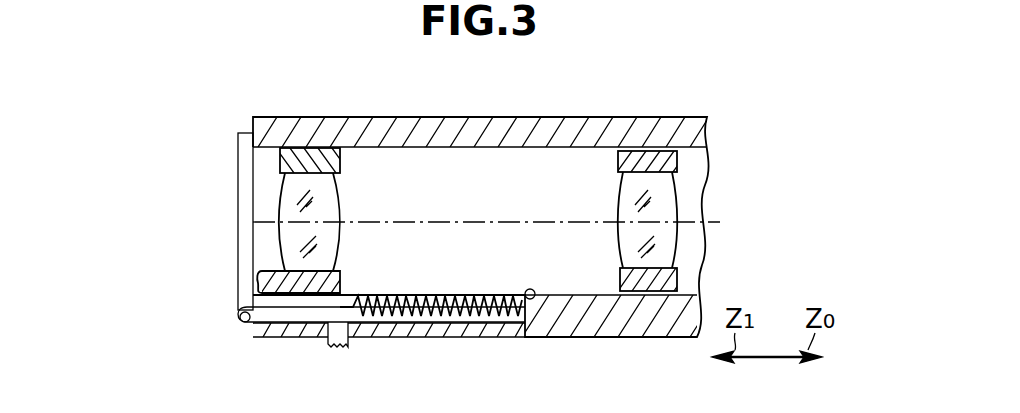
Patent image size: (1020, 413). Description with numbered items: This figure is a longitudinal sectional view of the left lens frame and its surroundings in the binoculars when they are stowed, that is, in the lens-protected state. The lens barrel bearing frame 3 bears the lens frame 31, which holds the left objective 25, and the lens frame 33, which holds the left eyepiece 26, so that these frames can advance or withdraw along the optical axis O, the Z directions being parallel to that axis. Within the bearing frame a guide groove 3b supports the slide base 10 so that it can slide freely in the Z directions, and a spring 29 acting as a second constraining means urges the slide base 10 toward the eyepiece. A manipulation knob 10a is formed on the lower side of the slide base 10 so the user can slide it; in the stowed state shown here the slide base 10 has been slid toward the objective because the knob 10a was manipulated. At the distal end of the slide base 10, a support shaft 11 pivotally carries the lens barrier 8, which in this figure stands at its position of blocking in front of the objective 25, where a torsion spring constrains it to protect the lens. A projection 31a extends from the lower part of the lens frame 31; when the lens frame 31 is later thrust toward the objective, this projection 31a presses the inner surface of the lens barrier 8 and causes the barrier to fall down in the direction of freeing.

The lens barrel bearing frame 3 is at (517, 117).
The guide groove 3b is at (513, 330).
The lens barrier 8 is at (240, 172).
The optical axis O is at (233, 212).
The lens frame 31 is at (302, 150).
The projection 31a is at (258, 288).
The left objective 25 is at (338, 197).
The lens frame 33 is at (632, 150).
The left eyepiece 26 is at (680, 200).
The slide base 10 is at (302, 320).
The manipulation knob 10a is at (345, 348).
The support shaft 11 is at (247, 326).
The spring 29 is at (438, 318).